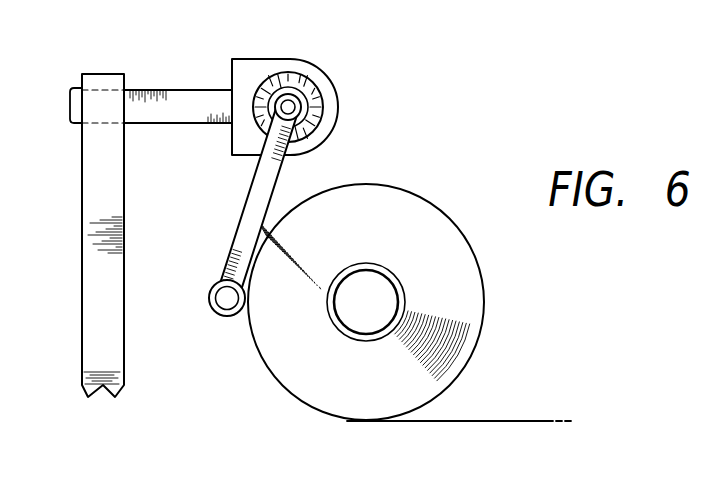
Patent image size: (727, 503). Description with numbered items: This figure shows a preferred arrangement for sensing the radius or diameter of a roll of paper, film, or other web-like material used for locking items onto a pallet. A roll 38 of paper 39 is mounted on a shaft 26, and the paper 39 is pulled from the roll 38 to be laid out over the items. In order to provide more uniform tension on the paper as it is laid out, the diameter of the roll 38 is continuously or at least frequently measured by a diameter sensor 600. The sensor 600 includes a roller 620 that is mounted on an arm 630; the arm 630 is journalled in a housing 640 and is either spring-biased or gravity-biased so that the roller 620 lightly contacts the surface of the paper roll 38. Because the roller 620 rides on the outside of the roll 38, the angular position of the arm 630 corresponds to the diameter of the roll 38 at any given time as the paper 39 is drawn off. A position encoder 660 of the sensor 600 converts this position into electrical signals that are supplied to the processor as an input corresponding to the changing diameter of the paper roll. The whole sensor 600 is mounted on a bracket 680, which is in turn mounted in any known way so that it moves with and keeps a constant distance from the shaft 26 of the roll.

The roll diameter sensor 600 is at (232, 213).
The bracket 680 is at (80, 347).
The housing 640 is at (254, 59).
The position encoder 660 is at (318, 104).
The arm 630 is at (247, 204).
The roller 620 is at (213, 317).
The roll 38 is at (430, 193).
The shaft 26 is at (377, 295).
The paper 39 is at (532, 421).